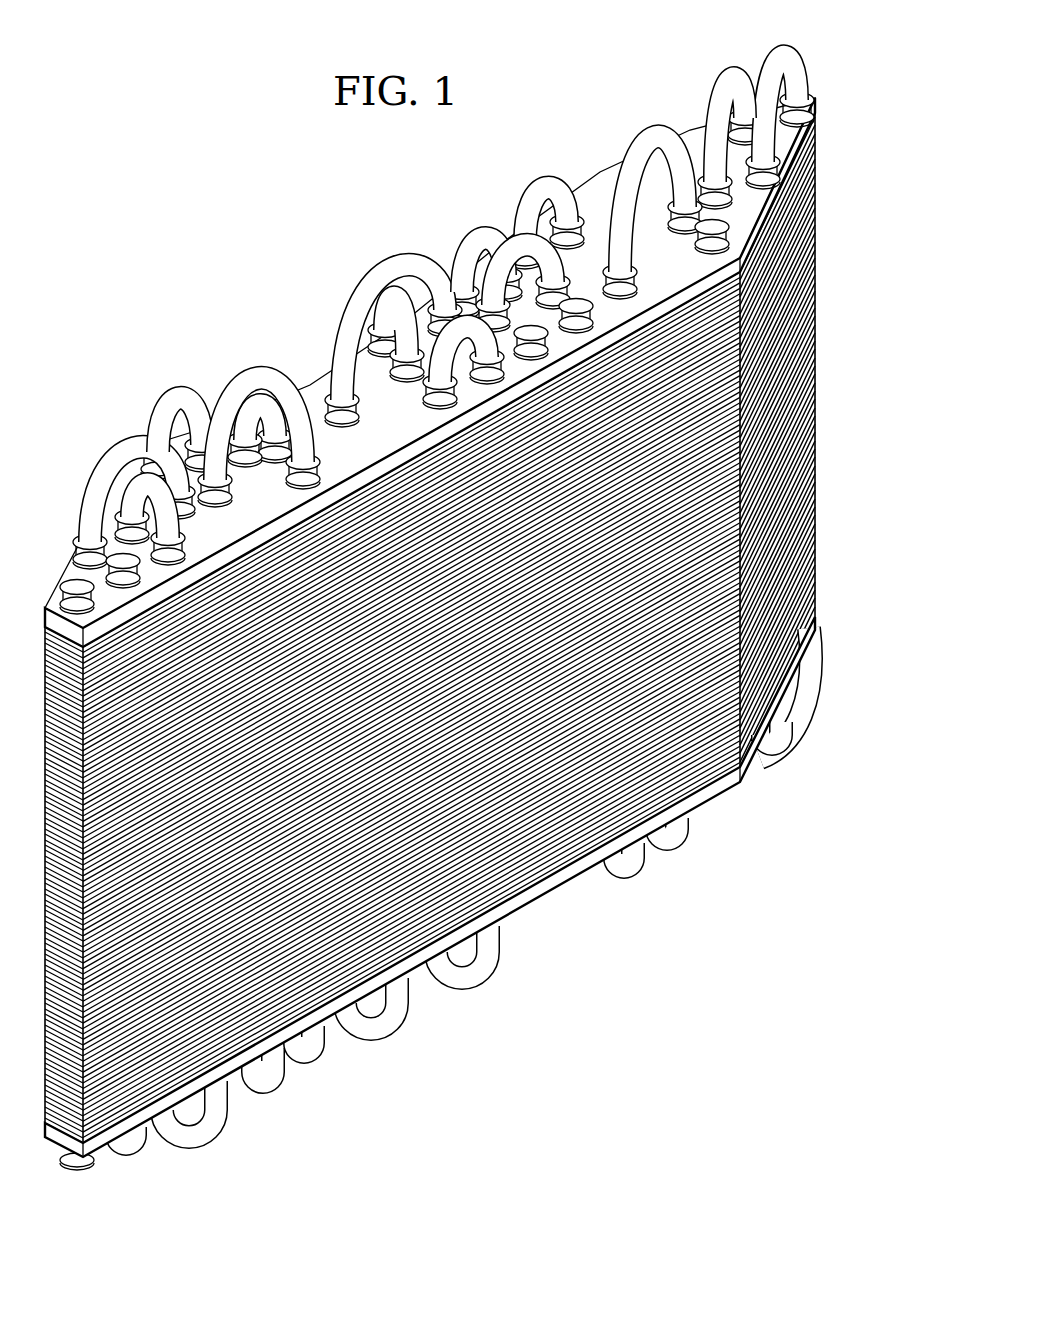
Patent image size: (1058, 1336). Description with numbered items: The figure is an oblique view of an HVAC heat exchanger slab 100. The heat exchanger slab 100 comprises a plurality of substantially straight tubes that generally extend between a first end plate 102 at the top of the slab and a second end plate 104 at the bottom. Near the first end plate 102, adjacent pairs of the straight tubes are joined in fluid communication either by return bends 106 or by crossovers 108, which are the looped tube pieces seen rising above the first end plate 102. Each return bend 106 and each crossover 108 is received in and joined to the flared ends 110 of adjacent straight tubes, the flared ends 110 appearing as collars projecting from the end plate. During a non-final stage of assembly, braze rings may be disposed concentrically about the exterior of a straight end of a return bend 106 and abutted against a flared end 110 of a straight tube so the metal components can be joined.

The heat exchanger slab 100 is at (258, 206).
The first end plate 102 is at (792, 128).
The second end plate 104 is at (564, 886).
The return bend 106 is at (544, 180).
The crossover 108 is at (783, 53).
The flared end 110 is at (813, 92).